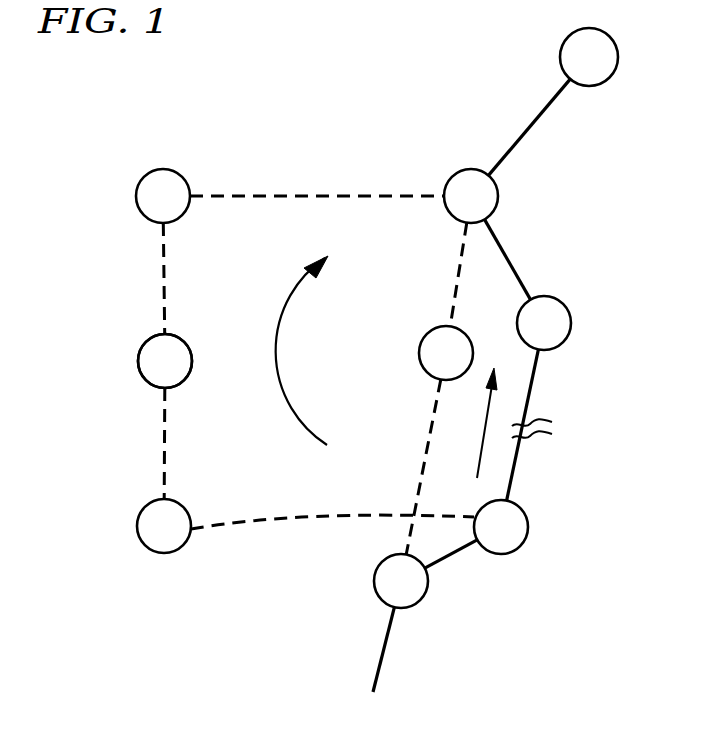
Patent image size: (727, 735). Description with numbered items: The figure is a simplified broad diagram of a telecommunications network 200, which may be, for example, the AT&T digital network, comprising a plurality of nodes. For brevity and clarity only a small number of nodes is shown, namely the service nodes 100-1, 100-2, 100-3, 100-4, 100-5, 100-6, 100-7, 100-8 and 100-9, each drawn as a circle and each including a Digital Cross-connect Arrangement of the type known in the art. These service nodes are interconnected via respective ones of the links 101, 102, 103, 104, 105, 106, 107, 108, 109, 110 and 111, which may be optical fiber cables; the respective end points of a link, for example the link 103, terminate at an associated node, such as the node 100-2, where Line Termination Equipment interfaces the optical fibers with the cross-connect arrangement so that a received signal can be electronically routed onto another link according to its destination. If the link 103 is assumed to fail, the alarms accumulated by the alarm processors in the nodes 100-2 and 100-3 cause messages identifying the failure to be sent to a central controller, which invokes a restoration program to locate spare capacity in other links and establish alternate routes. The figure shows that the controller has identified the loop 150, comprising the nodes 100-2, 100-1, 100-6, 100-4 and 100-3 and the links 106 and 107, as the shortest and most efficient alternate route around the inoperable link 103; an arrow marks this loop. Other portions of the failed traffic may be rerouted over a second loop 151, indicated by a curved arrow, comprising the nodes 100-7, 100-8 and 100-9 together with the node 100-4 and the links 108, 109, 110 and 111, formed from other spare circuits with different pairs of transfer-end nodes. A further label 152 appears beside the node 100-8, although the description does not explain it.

The service node 100-1 is at (373, 582).
The service node 100-2 is at (520, 548).
The service node 100-3 is at (565, 316).
The service node 100-4 is at (462, 178).
The service node 100-5 is at (560, 50).
The service node 100-6 is at (420, 345).
The service node 100-7 is at (170, 555).
The service node 100-8 is at (182, 378).
The service node 100-9 is at (152, 177).
The link 101 is at (390, 655).
The link 102 is at (460, 562).
The link 103 is at (520, 458).
The link 104 is at (506, 238).
The link 105 is at (530, 128).
The link 106 is at (428, 436).
The link 107 is at (461, 268).
The link 108 is at (306, 516).
The link 109 is at (167, 462).
The link 110 is at (167, 280).
The link 111 is at (302, 196).
The loop 150 is at (482, 432).
The loop 151 is at (277, 372).
The node designation 152 is at (146, 361).
The telecommunications network 200 is at (281, 672).